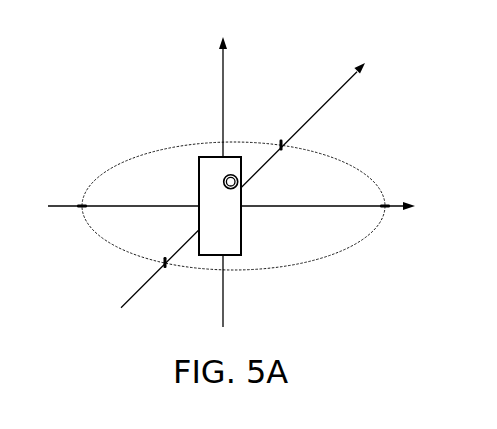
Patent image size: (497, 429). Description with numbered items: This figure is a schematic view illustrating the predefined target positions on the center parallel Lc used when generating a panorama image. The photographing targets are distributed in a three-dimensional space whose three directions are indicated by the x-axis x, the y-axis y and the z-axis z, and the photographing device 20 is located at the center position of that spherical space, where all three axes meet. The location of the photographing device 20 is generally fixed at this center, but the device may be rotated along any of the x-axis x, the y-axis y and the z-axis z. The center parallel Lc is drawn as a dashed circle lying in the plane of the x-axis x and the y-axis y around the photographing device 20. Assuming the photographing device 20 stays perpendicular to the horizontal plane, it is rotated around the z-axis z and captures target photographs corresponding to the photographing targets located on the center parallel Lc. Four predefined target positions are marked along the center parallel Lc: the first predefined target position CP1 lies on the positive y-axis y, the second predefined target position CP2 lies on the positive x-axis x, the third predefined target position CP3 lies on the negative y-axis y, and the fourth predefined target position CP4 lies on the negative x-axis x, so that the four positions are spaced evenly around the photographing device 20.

The photographing device 20 is at (223, 248).
The center parallel Lc is at (335, 160).
The first predefined target position CP1 is at (275, 135).
The second predefined target position CP2 is at (366, 219).
The third predefined target position CP3 is at (154, 252).
The fourth predefined target position CP4 is at (64, 219).
The x-axis x is at (238, 205).
The y-axis y is at (248, 172).
The z-axis z is at (222, 163).